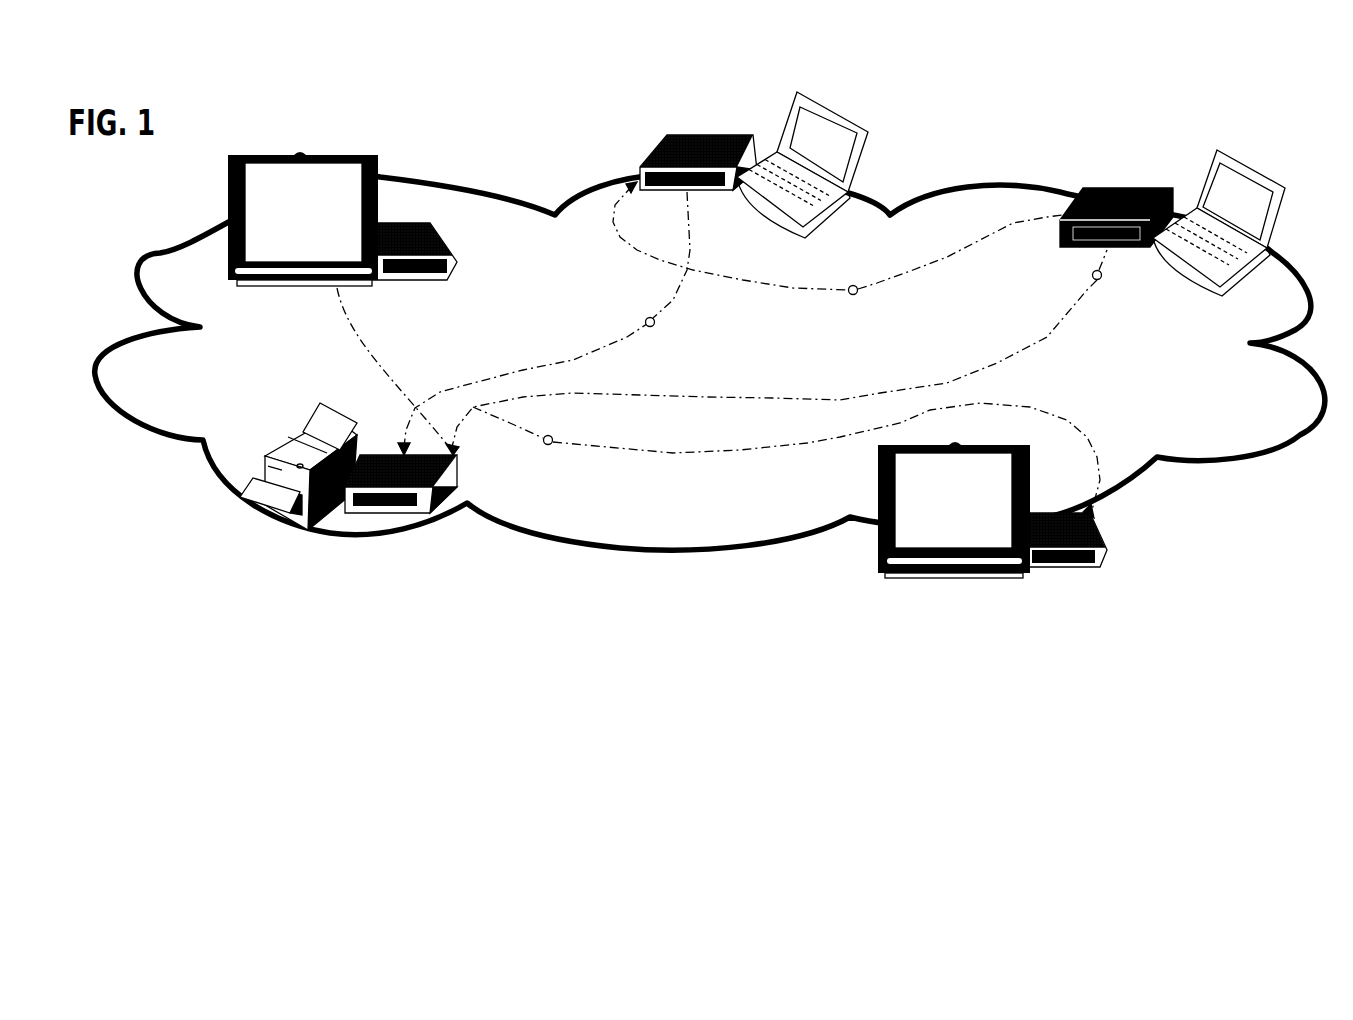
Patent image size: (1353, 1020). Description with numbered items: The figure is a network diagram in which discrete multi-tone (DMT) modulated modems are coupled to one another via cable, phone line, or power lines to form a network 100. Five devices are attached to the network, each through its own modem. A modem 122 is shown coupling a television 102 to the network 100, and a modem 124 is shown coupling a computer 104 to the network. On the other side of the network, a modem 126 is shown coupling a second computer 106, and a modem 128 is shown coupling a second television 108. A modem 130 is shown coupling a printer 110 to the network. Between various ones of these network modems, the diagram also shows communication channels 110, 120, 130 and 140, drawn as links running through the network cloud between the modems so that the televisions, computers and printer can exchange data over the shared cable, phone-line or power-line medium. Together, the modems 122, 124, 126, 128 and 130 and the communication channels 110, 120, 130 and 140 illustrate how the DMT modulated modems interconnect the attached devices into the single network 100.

The network 100 is at (145, 294).
The television 102 is at (275, 287).
The computer 104 is at (787, 120).
The computer 106 is at (1210, 175).
The television 108 is at (985, 580).
The printer 110 is at (293, 513).
The communication channel 120 is at (648, 327).
The modem 122 is at (437, 284).
The modem 124 is at (650, 155).
The modem 126 is at (1130, 183).
The modem 128 is at (1093, 570).
The modem 130 is at (375, 452).
The communication channel 140 is at (1099, 280).